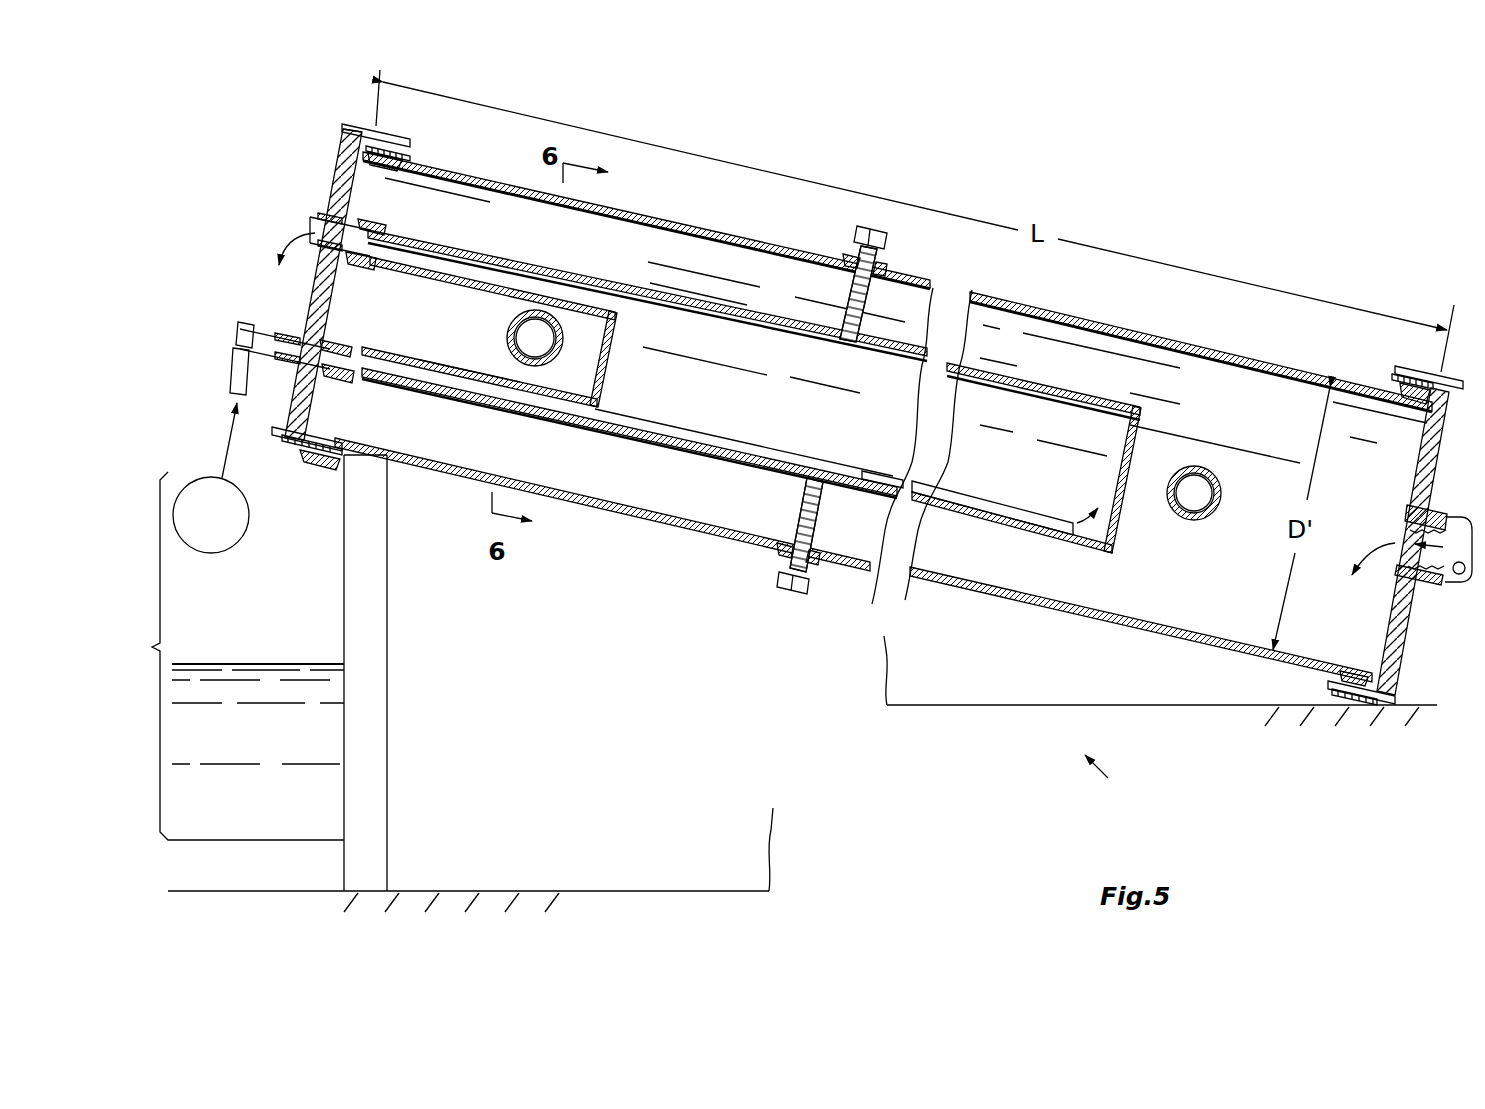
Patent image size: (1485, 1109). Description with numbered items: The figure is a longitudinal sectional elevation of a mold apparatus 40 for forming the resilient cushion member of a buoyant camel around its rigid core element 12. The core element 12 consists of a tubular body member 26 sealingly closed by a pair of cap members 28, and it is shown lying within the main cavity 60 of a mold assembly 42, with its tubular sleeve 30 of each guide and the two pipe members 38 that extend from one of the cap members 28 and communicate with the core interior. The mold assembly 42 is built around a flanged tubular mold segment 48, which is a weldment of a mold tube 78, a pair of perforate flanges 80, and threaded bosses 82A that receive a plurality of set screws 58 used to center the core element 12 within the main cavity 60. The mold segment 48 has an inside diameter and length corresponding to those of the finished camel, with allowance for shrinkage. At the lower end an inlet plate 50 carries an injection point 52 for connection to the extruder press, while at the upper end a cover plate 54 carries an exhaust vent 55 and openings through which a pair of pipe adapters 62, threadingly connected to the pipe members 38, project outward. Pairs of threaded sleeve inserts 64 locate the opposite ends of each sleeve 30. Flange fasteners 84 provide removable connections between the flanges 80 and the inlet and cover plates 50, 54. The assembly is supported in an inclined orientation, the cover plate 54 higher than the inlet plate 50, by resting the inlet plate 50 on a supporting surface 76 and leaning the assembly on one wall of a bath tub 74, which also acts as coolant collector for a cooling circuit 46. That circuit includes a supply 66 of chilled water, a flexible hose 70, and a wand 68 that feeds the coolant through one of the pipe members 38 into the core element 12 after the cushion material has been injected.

The core element 12 is at (1112, 543).
The tubular body member 26 is at (1083, 541).
The cap member 28 is at (613, 362).
The tubular sleeve 30 is at (511, 329).
The pipe member 38 is at (562, 270).
The mold apparatus 40 is at (1112, 777).
The mold assembly 42 is at (1023, 600).
The cooling circuit 46 is at (235, 656).
The flanged tubular mold segment 48 is at (653, 516).
The inlet plate 50 is at (1434, 474).
The injection point 52 is at (1421, 583).
The cover plate 54 is at (346, 182).
The exhaust vent 55 is at (346, 153).
The set screw 58 is at (856, 231).
The main cavity 60 is at (666, 492).
The pipe adapter 62 is at (318, 226).
The threaded sleeve insert 64 is at (523, 349).
The supply of chilled coolant 66 is at (236, 543).
The wand 68 is at (1030, 510).
The flexible hose 70 is at (232, 375).
The bath tub 74 is at (344, 598).
The supporting surface 76 is at (492, 889).
The mold tube 78 is at (1278, 364).
The perforate flange 80 is at (380, 136).
The threaded boss 82A is at (884, 268).
The flange fastener 84 is at (326, 462).